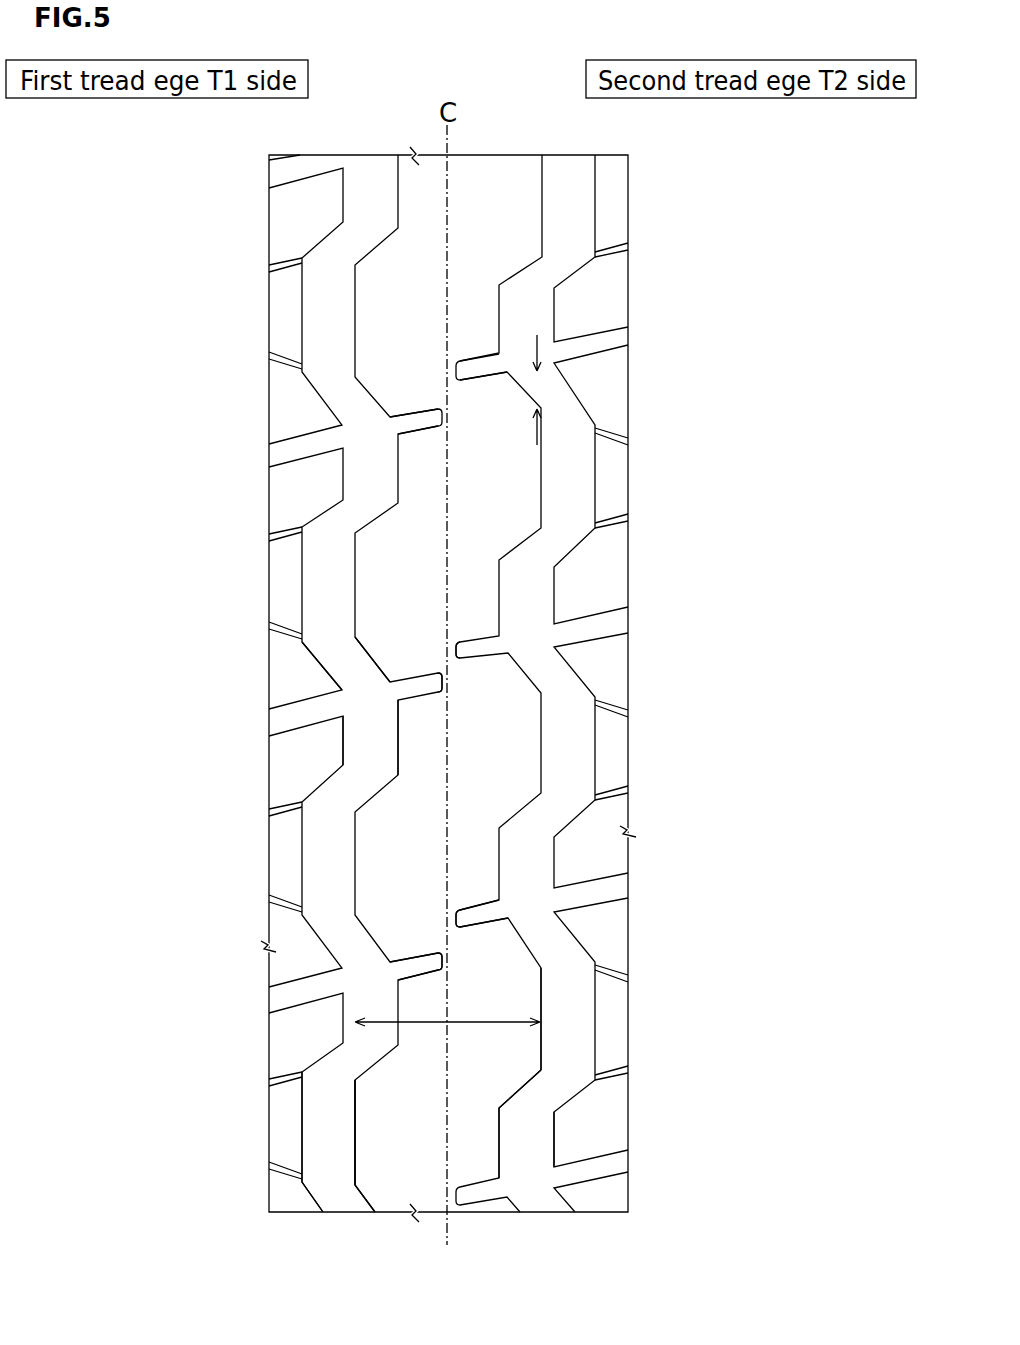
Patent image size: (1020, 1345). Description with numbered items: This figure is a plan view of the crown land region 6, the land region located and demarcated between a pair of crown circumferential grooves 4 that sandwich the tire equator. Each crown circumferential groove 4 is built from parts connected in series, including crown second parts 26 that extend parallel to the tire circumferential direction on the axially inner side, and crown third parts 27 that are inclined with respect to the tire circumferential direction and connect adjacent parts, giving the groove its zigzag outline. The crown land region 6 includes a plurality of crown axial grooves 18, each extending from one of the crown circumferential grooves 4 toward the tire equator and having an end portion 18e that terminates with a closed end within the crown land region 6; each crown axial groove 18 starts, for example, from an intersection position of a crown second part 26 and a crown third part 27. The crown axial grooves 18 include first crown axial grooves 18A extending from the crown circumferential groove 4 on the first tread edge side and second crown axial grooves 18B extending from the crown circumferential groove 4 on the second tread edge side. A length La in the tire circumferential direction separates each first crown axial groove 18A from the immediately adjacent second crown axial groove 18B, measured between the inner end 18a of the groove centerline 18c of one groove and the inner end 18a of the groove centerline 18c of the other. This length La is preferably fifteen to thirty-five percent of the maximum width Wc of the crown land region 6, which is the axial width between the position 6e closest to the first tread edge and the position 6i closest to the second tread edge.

The crown circumferential groove 4 is at (328, 1160).
The crown land region 6 is at (449, 634).
The position of the crown land region closest to the first tread edge 6e is at (345, 1130).
The position of the crown land region closest to the second tread edge 6i is at (548, 1060).
The crown axial groove 18 is at (436, 896).
The first crown axial groove 18A is at (412, 407).
The second crown axial groove 18B is at (470, 354).
The inner end of the groove centerline 18a is at (482, 352).
The groove centerline 18c is at (470, 380).
The end portion 18e is at (440, 684).
The crown second part 26 is at (372, 738).
The crown third part 27 is at (345, 664).
The length in the tire circumferential direction La is at (545, 378).
The maximum width of the crown land region Wc is at (497, 1014).